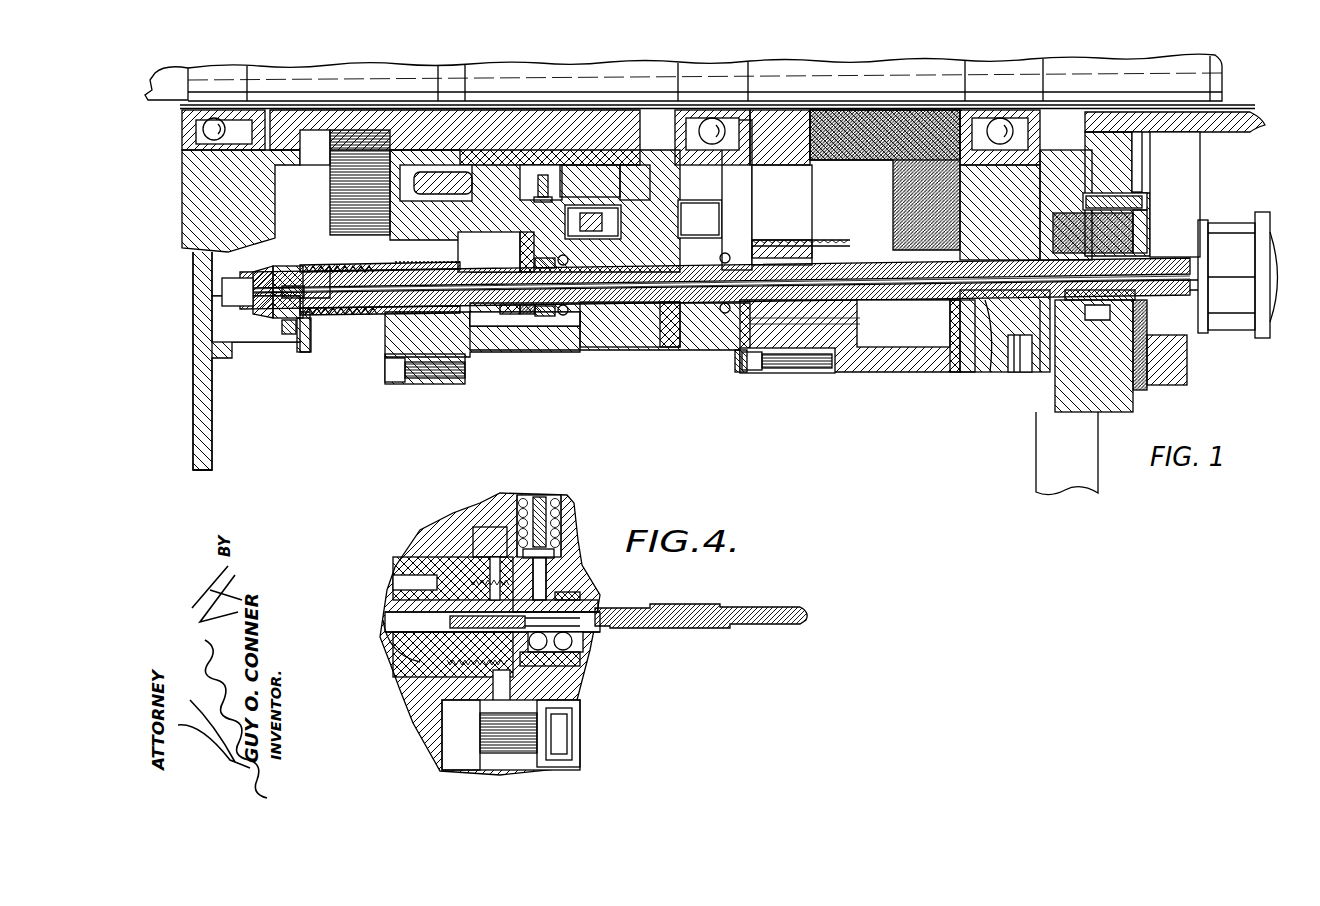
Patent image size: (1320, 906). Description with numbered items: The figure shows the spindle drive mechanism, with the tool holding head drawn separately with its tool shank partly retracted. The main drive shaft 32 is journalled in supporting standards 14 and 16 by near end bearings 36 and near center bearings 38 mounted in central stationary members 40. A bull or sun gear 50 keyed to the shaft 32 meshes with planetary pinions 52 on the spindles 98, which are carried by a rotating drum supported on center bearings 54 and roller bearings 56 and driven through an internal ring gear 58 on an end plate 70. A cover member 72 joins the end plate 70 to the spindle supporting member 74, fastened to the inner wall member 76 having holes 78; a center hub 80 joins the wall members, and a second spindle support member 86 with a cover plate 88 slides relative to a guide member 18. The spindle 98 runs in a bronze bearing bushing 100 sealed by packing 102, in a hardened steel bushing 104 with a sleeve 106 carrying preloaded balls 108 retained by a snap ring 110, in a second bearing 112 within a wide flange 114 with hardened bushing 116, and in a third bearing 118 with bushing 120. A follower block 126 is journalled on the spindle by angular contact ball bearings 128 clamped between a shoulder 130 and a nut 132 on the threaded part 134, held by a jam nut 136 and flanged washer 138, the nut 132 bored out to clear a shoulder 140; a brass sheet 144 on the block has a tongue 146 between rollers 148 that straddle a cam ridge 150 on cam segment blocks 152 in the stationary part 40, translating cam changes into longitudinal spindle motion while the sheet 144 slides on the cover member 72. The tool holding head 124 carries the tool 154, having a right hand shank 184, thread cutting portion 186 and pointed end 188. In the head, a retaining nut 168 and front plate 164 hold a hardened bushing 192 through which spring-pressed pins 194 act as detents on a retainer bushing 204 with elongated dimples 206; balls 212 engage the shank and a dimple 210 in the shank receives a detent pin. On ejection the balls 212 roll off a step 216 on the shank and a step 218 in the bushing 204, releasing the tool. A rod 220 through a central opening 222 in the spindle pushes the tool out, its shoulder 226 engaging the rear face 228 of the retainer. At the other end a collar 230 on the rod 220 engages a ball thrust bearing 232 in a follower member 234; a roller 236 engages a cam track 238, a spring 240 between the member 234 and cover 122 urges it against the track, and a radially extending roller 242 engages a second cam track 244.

In FIG. 1, the supporting standard 14 is at (213, 434).
In FIG. 1, the supporting standard 16 is at (1072, 456).
In FIG. 1, the guide member 18 is at (1108, 390).
In FIG. 1, the main drive shaft 32 is at (315, 88).
In FIG. 1, the near end bearing 36 is at (185, 118).
In FIG. 1, the near center bearing 38 is at (695, 110).
In FIG. 1, the central stationary member 40 is at (570, 160).
In FIG. 1, the bull or sun gear 50 is at (896, 176).
In FIG. 1, the planetary pinion 52 is at (927, 303).
In FIG. 1, the center bearing 54 is at (1010, 125).
In FIG. 1, the roller bearing 56 is at (494, 160).
In FIG. 1, the internal ring gear 58 is at (330, 192).
In FIG. 1, the end plate 70 is at (487, 232).
In FIG. 1, the cover member 72 is at (478, 344).
In FIG. 1, the spindle supporting member 74 is at (846, 372).
In FIG. 1, the inner wall member 76 is at (1045, 185).
In FIG. 1, the hole 78 is at (1030, 370).
In FIG. 1, the center hub 80 is at (1200, 135).
In FIG. 1, the second spindle support member 86 is at (1145, 222).
In FIG. 1, the cover plate 88 is at (1138, 388).
In FIG. 1, the tool driving shaft 98 is at (888, 300).
In FIG. 4, the tool driving shaft 98 is at (420, 660).
In FIG. 1, the bronze bearing bushing 100 is at (1145, 300).
In FIG. 1, the packing 102 is at (1145, 318).
In FIG. 1, the hardened steel bushing 104 is at (952, 372).
In FIG. 1, the sleeve 106 is at (985, 352).
In FIG. 1, the ball 108 is at (976, 348).
In FIG. 1, the snap ring 110 is at (1040, 358).
In FIG. 1, the second bearing 112 is at (780, 370).
In FIG. 1, the wide flange 114 is at (816, 240).
In FIG. 1, the hardened bushing 116 is at (762, 362).
In FIG. 1, the third bearing 118 is at (455, 266).
In FIG. 1, the bushing 120 is at (465, 314).
In FIG. 1, the cover 122 is at (373, 337).
In FIG. 1, the tool holding head 124 is at (1215, 300).
In FIG. 1, the follower block 126 is at (646, 320).
In FIG. 1, the angular contact ball bearing 128 is at (566, 316).
In FIG. 1, the shoulder 130 is at (745, 262).
In FIG. 1, the nut 132 is at (547, 318).
In FIG. 1, the threaded part 134 is at (502, 270).
In FIG. 1, the jam nut 136 is at (528, 313).
In FIG. 1, the flanged washer 138 is at (530, 320).
In FIG. 1, the shoulder 140 is at (558, 260).
In FIG. 1, the sheet 144 is at (679, 337).
In FIG. 1, the tongue 146 is at (648, 180).
In FIG. 1, the roller 148 is at (578, 210).
In FIG. 1, the cam ridge 150 is at (634, 210).
In FIG. 1, the cam segment block 152 is at (546, 175).
In FIG. 4, the tool 154 is at (642, 610).
In FIG. 4, the front plate 164 is at (575, 692).
In FIG. 4, the retaining nut 168 is at (511, 735).
In FIG. 4, the right hand shank 184 is at (625, 608).
In FIG. 4, the thread cutting portion 186 is at (705, 608).
In FIG. 4, the pointed end 188 is at (803, 622).
In FIG. 4, the hardened bushing 192 is at (570, 648).
In FIG. 4, the pin 194 is at (545, 566).
In FIG. 4, the retainer bushing 204 is at (575, 590).
In FIG. 4, the elongated dimple 206 is at (580, 603).
In FIG. 4, the dimple 210 is at (780, 610).
In FIG. 4, the ball 212 is at (560, 640).
In FIG. 4, the step 216 is at (580, 628).
In FIG. 4, the step 218 is at (560, 668).
In FIG. 1, the rod 220 is at (690, 292).
In FIG. 4, the rod 220 is at (452, 600).
In FIG. 1, the central opening 222 is at (616, 305).
In FIG. 4, the shoulder 226 is at (452, 622).
In FIG. 4, the rear face 228 is at (465, 560).
In FIG. 1, the collar 230 is at (308, 320).
In FIG. 1, the ball thrust bearing 232 is at (290, 266).
In FIG. 1, the follower member 234 is at (255, 275).
In FIG. 4, the follower member 234 is at (515, 625).
In FIG. 1, the roller 236 is at (270, 318).
In FIG. 1, the cam track 238 is at (241, 302).
In FIG. 1, the spring 240 is at (345, 316).
In FIG. 1, the radially extending roller 242 is at (285, 335).
In FIG. 1, the second cam track 244 is at (306, 354).